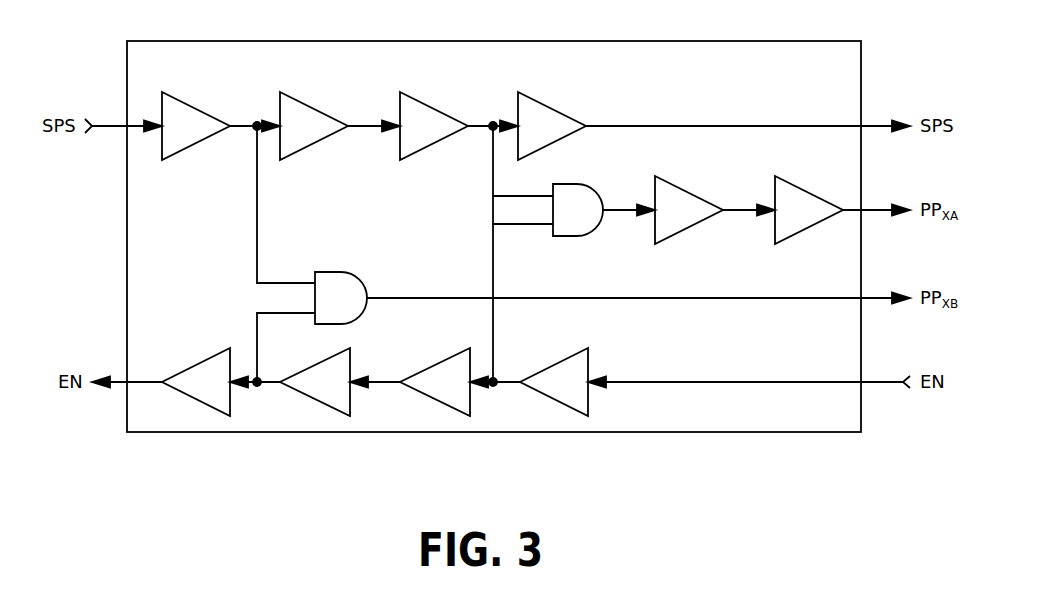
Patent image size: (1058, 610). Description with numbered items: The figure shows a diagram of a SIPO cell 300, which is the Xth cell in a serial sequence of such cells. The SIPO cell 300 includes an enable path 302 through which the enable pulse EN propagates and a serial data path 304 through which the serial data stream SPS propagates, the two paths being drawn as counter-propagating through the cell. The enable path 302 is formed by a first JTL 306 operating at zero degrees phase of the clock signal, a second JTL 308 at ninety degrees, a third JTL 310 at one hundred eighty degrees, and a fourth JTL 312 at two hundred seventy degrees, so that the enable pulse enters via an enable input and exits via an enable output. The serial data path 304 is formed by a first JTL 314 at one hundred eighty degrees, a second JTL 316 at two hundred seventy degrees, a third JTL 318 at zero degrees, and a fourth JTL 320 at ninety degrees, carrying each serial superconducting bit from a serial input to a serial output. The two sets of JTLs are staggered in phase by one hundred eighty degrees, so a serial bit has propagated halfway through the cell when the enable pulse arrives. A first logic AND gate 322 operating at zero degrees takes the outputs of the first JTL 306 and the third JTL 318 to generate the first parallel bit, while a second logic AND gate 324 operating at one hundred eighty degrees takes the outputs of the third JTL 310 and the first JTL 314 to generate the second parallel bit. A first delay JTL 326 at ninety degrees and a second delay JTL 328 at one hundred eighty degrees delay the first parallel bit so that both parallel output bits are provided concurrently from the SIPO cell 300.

The SIPO cell 300 is at (195, 40).
The enable path 302 is at (655, 348).
The serial data path 304 is at (165, 76).
The first JTL 306 is at (560, 401).
The second JTL 308 is at (445, 403).
The third JTL 310 is at (320, 401).
The fourth JTL 312 is at (207, 403).
The first JTL 314 is at (184, 150).
The second JTL 316 is at (303, 152).
The third JTL 318 is at (427, 150).
The fourth JTL 320 is at (550, 145).
The first logic AND gate 322 is at (580, 236).
The second logic AND gate 324 is at (350, 271).
The first delay JTL 326 is at (677, 233).
The second delay JTL 328 is at (817, 225).